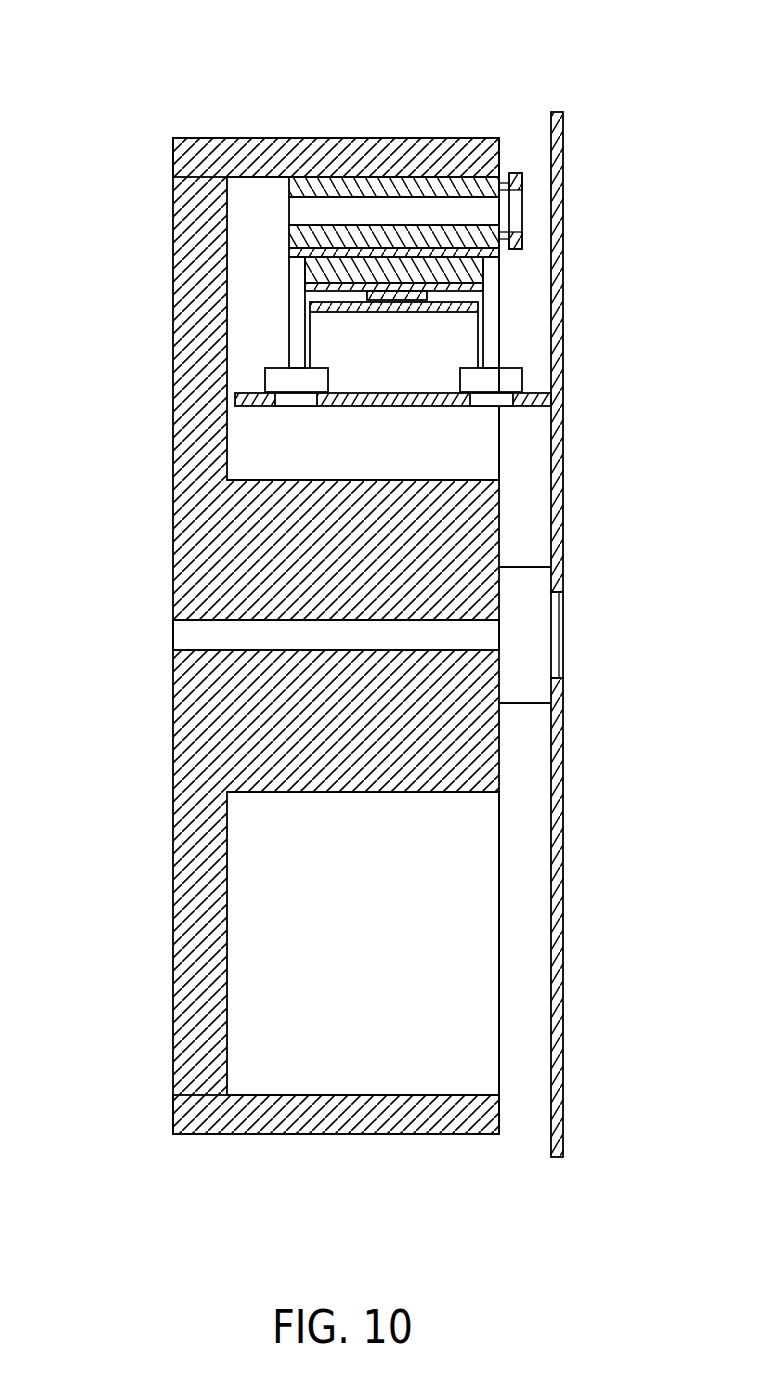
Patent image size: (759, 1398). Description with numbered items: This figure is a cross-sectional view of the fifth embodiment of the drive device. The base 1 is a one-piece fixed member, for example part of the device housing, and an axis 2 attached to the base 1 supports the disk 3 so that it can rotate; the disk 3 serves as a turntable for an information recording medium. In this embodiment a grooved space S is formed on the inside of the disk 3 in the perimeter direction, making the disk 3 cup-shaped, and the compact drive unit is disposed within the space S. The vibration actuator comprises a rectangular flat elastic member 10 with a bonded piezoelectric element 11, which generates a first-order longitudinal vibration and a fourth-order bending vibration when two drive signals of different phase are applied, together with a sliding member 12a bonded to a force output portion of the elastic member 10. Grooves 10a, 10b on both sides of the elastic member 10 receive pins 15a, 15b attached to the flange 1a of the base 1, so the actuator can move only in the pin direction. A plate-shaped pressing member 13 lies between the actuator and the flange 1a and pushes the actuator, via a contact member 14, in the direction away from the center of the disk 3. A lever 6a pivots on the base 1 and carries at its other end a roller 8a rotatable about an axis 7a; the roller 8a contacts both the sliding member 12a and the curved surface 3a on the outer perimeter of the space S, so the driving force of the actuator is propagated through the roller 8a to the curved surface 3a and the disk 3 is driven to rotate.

The base 1 is at (563, 803).
The flange 1a is at (413, 403).
The axis 2 is at (470, 632).
The disk 3 is at (210, 548).
The curved surface 3a is at (346, 173).
The lever 6a is at (513, 180).
The axis 7a is at (470, 214).
The roller 8a is at (318, 186).
The elastic member 10 is at (350, 272).
The groove 10a is at (297, 260).
The groove 10b is at (493, 260).
The piezoelectric element 11 is at (440, 289).
The sliding member 12a is at (360, 247).
The pressing member 13 is at (323, 337).
The contact member 14 is at (375, 297).
The pin 15a is at (283, 378).
The pin 15b is at (495, 380).
The grooved space S is at (450, 460).